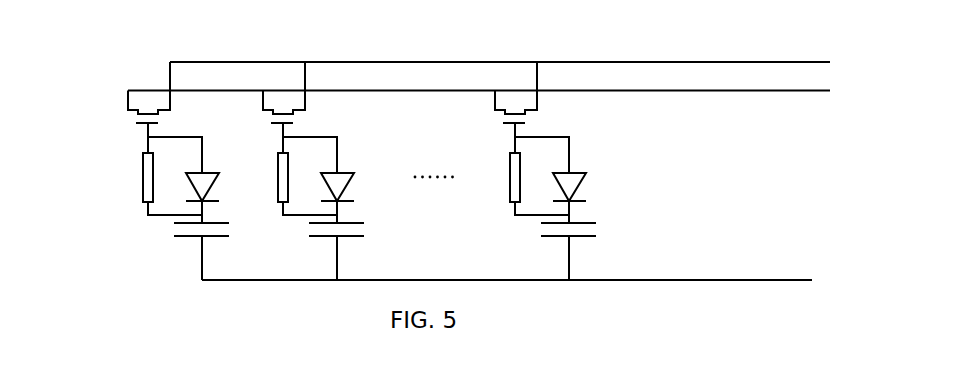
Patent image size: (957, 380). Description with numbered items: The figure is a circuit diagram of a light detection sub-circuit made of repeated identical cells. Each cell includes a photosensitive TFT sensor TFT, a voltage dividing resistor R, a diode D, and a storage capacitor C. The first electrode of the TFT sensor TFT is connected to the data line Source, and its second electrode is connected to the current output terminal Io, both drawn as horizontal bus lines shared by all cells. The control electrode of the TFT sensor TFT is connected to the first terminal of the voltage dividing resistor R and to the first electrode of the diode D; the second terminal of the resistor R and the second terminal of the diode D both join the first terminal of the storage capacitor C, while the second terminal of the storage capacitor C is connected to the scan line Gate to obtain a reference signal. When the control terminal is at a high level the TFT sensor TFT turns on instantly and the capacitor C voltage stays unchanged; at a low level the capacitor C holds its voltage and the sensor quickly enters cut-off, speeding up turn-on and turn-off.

The current output terminal Io is at (500, 47).
The data line Source is at (479, 110).
The scan line Gate is at (507, 268).
The TFT sensor TFT is at (103, 94).
The voltage dividing resistor R is at (135, 177).
The diode D is at (215, 187).
The storage capacitor C is at (188, 242).